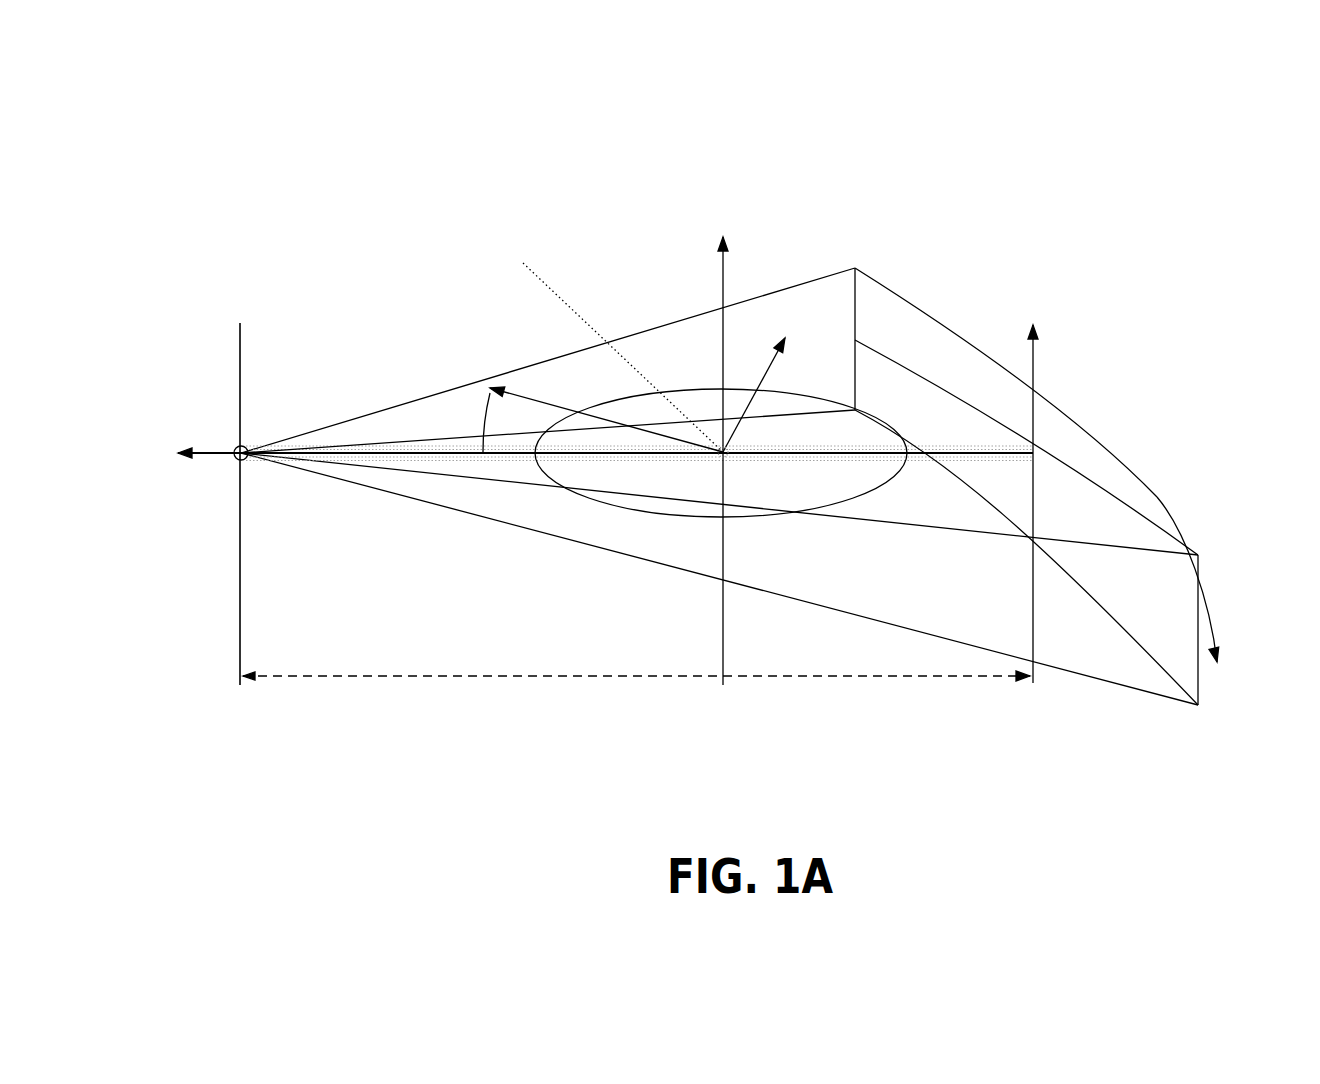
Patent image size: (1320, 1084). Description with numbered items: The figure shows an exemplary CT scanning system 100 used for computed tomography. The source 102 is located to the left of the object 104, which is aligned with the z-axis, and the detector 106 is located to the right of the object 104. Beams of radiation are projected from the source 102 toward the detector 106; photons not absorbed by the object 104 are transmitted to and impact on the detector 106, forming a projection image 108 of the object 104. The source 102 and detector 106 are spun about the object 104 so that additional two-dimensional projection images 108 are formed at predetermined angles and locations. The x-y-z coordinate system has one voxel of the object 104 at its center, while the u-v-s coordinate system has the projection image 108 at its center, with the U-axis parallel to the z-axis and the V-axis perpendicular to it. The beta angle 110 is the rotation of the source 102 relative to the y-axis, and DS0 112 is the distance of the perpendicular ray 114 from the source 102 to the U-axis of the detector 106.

The scanning system 100 is at (1272, 127).
The source 102 is at (225, 427).
The object 104 is at (692, 460).
The detector 106 is at (1158, 495).
The image 108 is at (1034, 447).
The beta angle 110 is at (470, 425).
The DS0 112 is at (513, 677).
The perpendicular ray 114 is at (238, 613).